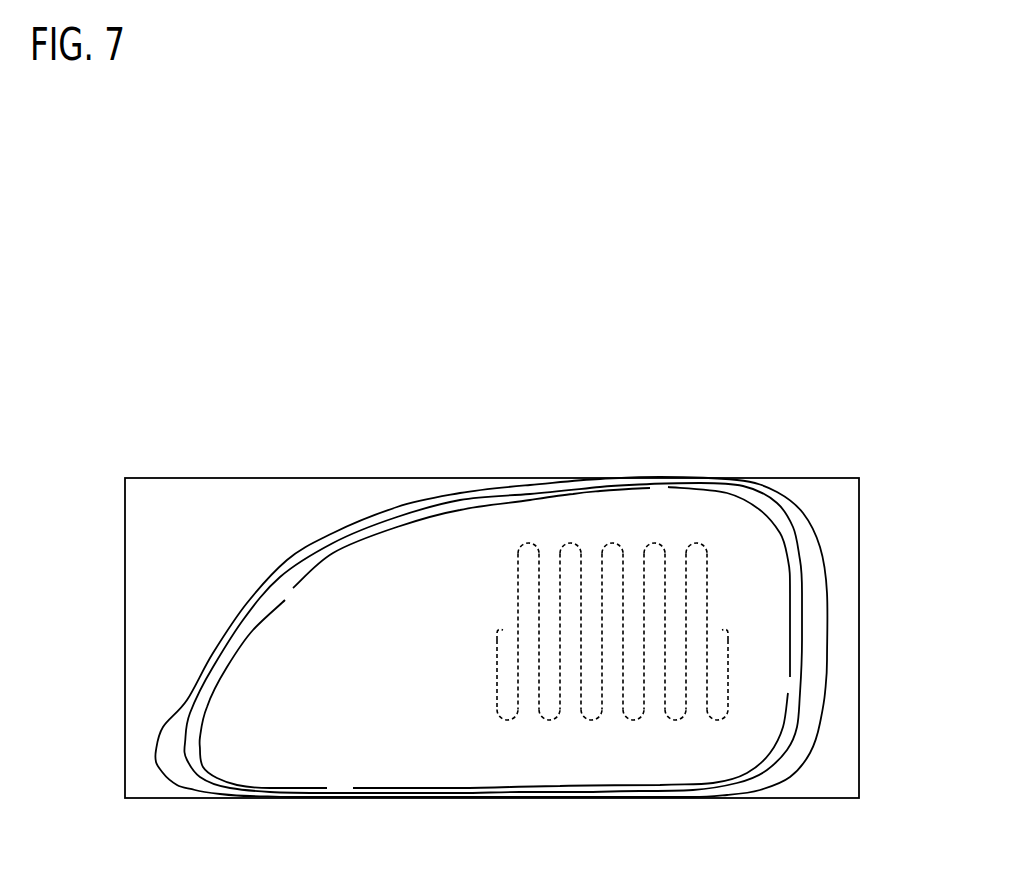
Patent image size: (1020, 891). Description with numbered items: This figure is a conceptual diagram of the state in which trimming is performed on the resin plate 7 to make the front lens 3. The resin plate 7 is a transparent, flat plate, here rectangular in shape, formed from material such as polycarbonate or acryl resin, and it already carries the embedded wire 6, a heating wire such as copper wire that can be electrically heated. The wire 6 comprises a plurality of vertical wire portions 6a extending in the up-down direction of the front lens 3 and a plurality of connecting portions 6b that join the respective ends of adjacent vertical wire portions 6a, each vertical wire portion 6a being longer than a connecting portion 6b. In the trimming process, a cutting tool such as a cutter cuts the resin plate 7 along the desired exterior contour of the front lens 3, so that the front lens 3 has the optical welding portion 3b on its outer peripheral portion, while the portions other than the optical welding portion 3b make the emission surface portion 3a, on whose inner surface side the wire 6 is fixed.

The front lens 3 is at (491, 574).
The light emission surface portion 3a is at (455, 542).
The optical welding portion 3b is at (415, 517).
The wire 6 is at (690, 627).
The vertical wire portions 6a is at (557, 578).
The connecting portions 6b is at (571, 543).
The resin plate 7 is at (203, 495).